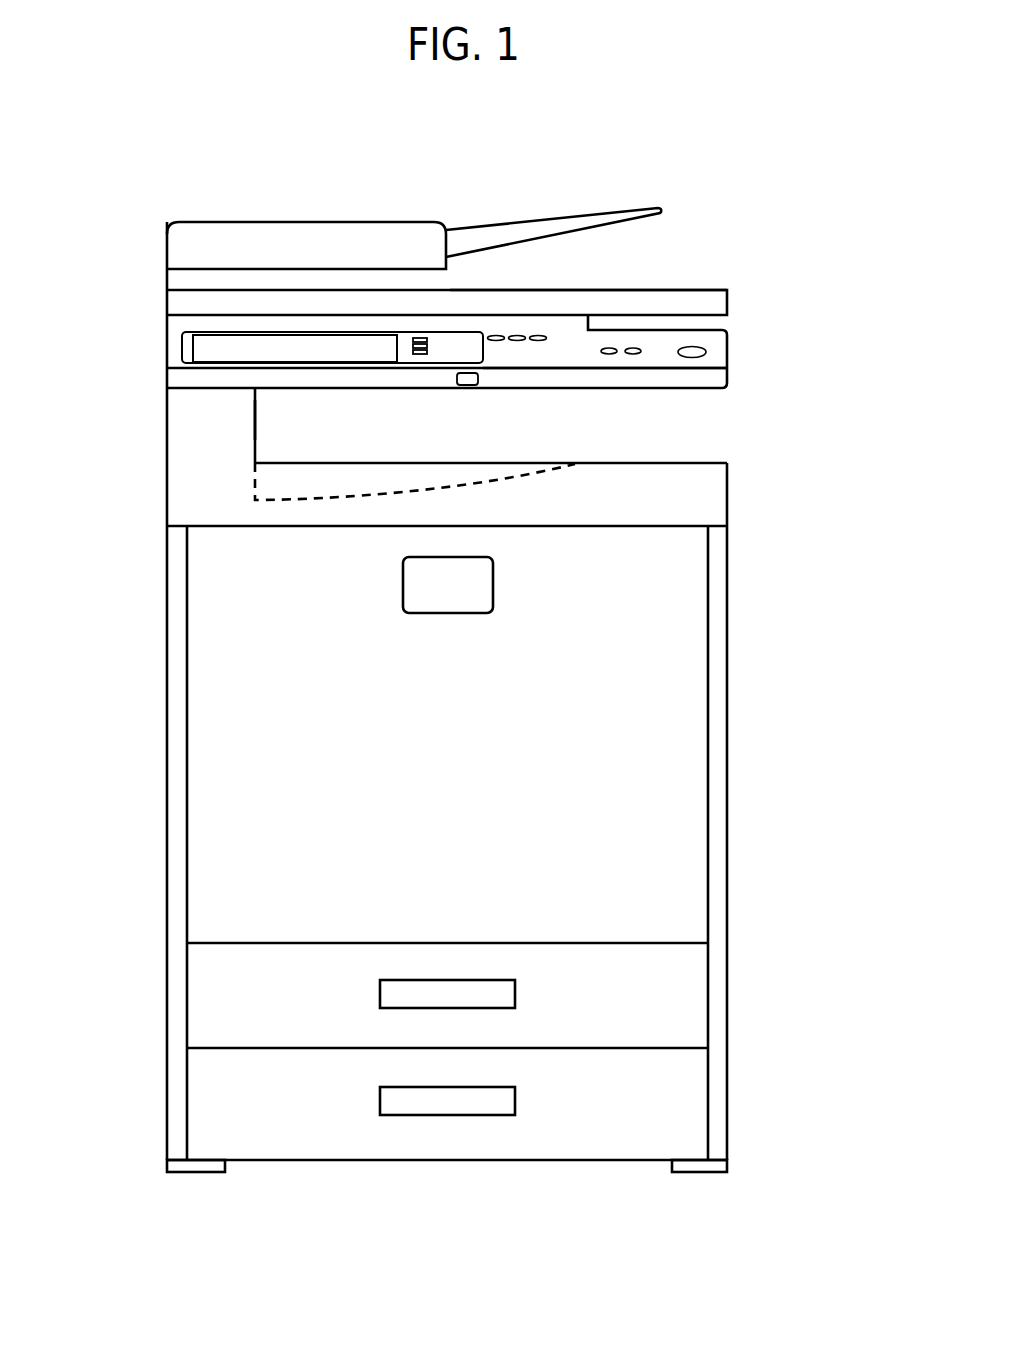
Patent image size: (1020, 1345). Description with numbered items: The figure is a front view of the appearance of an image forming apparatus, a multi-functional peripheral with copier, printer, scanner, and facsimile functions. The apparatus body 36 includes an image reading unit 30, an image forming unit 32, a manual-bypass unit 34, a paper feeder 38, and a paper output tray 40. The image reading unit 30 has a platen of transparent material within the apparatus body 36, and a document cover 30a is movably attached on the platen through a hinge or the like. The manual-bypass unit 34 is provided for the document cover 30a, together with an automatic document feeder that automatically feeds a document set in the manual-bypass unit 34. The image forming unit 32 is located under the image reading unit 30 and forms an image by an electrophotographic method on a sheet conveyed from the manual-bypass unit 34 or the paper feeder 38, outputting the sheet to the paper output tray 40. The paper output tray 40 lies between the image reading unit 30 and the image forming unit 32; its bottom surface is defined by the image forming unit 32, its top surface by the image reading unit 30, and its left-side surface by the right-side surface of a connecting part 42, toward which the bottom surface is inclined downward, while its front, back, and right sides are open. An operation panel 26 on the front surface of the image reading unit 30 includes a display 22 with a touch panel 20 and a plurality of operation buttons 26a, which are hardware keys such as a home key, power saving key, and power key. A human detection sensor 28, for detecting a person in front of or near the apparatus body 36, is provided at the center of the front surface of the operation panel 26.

The touch panel 20 is at (207, 348).
The display 22 is at (249, 349).
The operation panel 26 is at (718, 354).
The operation buttons 26a is at (517, 347).
The human detection sensor 28 is at (457, 386).
The image reading unit 30 is at (730, 325).
The document cover 30a is at (675, 287).
The image forming unit 32 is at (710, 868).
The manual-bypass unit 34 is at (582, 213).
The apparatus body 36 is at (730, 763).
The paper feeder 38 is at (220, 1003).
The paper output tray 40 is at (637, 463).
The connecting part 42 is at (257, 442).